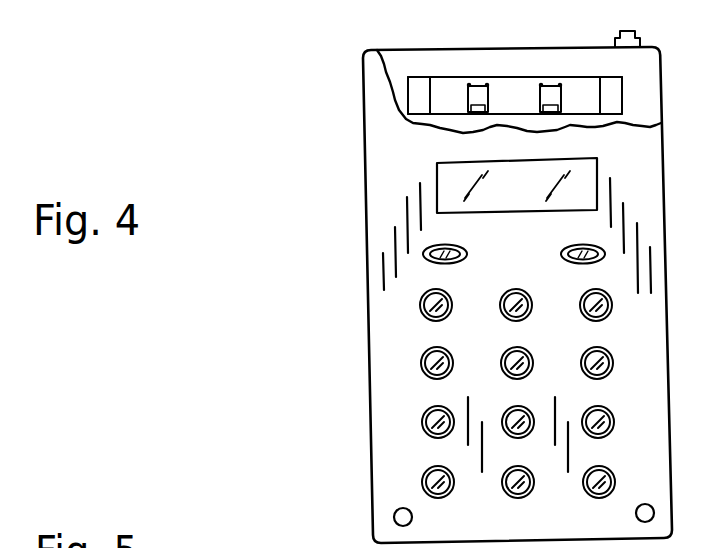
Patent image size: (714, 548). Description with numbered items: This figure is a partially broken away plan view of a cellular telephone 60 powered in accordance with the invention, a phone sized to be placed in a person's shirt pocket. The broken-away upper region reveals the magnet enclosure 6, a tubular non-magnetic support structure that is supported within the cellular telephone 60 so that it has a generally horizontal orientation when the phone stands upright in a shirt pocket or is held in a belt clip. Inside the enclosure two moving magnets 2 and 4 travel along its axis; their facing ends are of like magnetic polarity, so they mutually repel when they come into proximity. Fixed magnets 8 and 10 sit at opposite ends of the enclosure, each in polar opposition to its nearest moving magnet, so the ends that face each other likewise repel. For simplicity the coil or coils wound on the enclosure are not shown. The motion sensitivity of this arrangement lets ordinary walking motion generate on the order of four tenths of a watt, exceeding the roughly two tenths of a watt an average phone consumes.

The moving magnet 2 is at (480, 95).
The moving magnet 4 is at (549, 93).
The magnet enclosure 6 is at (512, 77).
The fixed magnet 8 is at (414, 84).
The fixed magnet 10 is at (610, 80).
The cellular telephone 60 is at (322, 314).